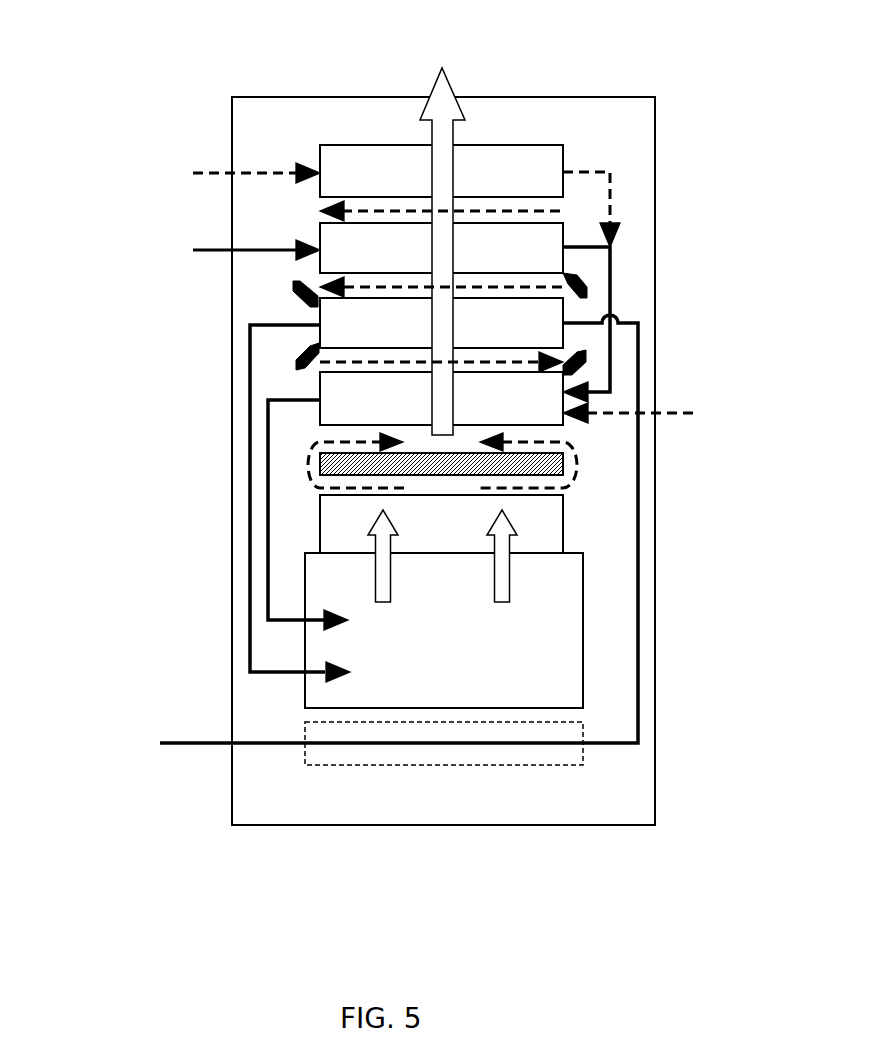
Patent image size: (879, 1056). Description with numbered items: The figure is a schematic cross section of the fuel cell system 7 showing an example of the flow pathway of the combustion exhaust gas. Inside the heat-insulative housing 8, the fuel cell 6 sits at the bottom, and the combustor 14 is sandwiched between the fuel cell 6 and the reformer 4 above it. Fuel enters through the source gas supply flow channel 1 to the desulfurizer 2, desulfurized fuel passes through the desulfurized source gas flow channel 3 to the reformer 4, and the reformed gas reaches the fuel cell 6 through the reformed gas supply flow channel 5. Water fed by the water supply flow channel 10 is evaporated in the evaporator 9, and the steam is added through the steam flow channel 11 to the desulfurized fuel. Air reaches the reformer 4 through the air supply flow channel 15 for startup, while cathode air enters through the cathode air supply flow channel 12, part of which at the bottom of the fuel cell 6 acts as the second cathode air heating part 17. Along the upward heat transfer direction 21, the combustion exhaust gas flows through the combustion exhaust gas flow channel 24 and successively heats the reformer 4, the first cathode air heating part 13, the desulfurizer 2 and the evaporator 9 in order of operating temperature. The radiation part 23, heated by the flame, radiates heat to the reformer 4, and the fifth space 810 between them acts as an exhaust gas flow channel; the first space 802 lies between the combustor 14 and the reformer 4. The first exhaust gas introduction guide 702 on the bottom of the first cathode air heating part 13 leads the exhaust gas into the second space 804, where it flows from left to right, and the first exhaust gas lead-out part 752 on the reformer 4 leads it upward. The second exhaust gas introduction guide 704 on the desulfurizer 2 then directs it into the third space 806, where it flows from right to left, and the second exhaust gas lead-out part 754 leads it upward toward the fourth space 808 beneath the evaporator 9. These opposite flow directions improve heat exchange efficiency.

The source gas supply flow channel 1 is at (206, 255).
The desulfurizer 2 is at (565, 245).
The desulfurized source gas flow channel 3 is at (615, 292).
The reformer 4 is at (441, 398).
The reformed gas supply flow channel 5 is at (270, 506).
The fuel cell 6 is at (445, 612).
The fuel cell system 7 is at (222, 96).
The housing 8 is at (231, 130).
The evaporator 9 is at (478, 145).
The water supply flow channel 10 is at (210, 178).
The steam flow channel 11 is at (588, 166).
The cathode air supply flow channel 12 is at (186, 740).
The first cathode air heating part 13 is at (441, 323).
The combustor 14 is at (548, 530).
The air supply flow channel 15 is at (678, 410).
The second cathode air heating part 17 is at (412, 766).
The heat transfer direction of the combustion exhaust gas 21 is at (452, 85).
The radiation part 23 is at (568, 441).
The combustion exhaust gas flow channel 24 is at (566, 489).
The first exhaust gas introduction guide 702 is at (295, 358).
The second exhaust gas introduction guide 704 is at (583, 297).
The first exhaust gas lead-out part 752 is at (585, 375).
The second exhaust gas lead-out part 754 is at (296, 297).
The first space 802 is at (317, 487).
The second space 804 is at (318, 372).
The third space 806 is at (320, 286).
The fourth space 808 is at (320, 211).
The fifth space 810 is at (330, 437).